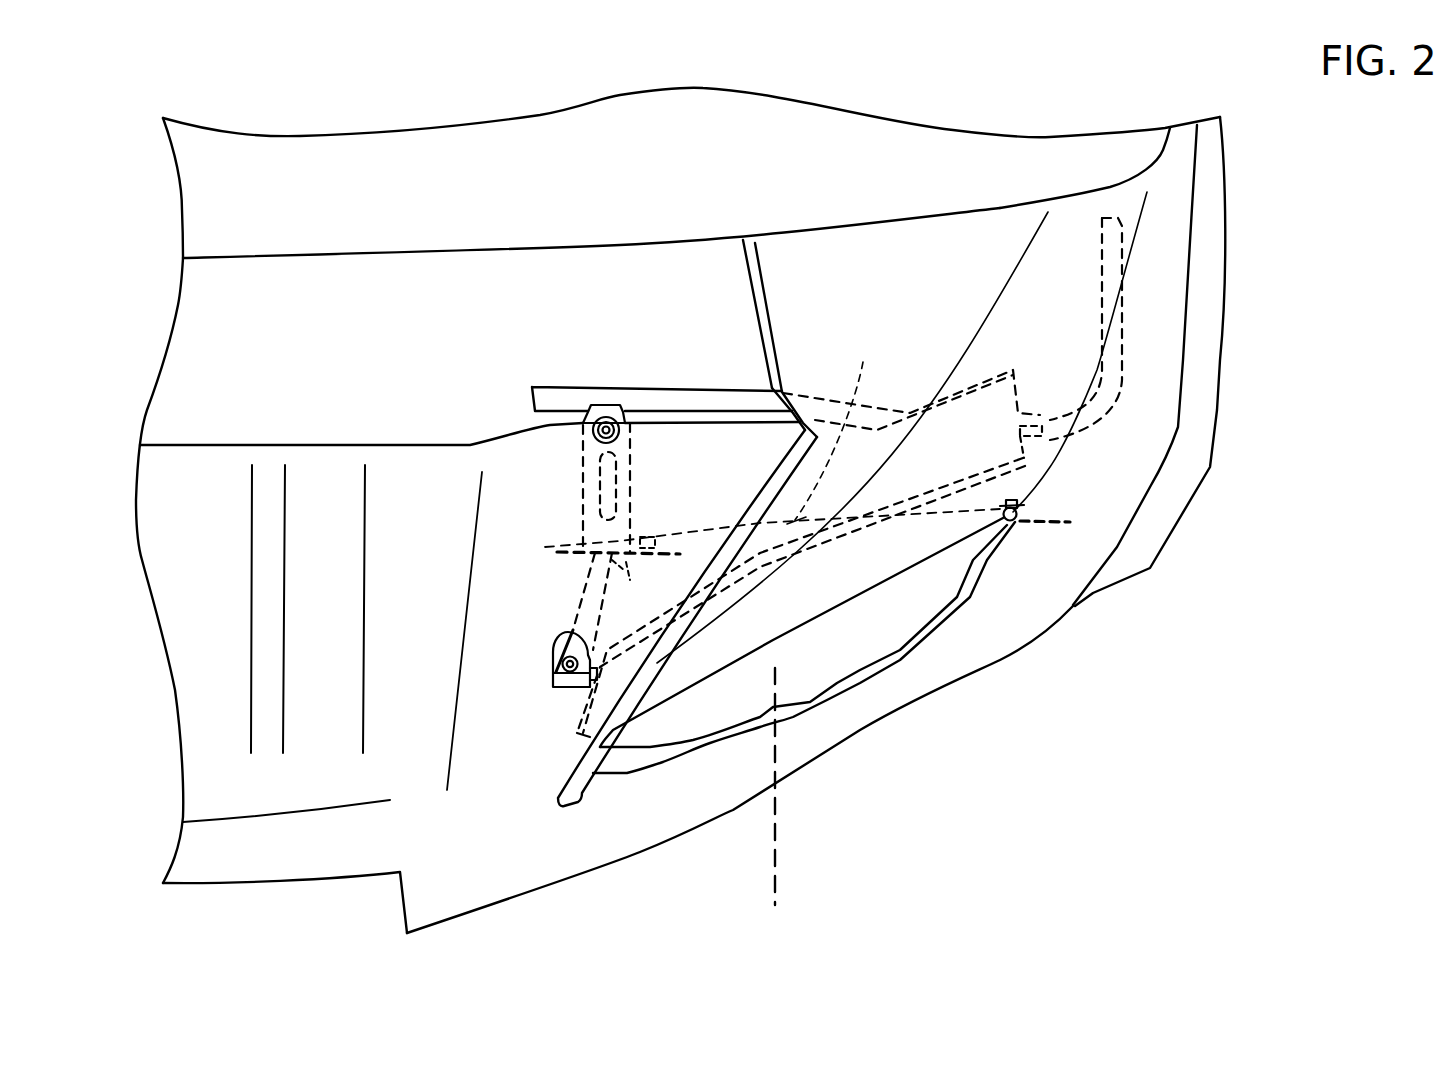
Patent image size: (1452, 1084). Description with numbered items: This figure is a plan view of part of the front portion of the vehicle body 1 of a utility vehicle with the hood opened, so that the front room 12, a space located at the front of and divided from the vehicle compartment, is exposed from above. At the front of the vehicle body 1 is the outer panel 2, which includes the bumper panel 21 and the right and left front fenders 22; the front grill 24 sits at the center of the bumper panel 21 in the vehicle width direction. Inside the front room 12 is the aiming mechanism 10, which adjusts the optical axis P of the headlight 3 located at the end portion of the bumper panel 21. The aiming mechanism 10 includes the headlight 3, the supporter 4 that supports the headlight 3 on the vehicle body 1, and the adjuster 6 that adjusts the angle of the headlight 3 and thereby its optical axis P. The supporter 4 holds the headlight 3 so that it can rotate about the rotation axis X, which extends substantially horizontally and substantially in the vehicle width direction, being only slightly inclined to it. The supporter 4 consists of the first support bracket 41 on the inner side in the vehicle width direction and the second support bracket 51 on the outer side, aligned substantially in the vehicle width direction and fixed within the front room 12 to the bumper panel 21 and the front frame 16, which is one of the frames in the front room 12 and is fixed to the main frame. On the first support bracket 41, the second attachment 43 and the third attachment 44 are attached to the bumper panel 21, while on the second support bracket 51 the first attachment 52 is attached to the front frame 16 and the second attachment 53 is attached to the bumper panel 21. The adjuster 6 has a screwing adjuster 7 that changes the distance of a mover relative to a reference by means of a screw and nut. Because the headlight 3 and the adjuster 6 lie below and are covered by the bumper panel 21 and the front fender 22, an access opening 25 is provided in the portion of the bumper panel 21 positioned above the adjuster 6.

The vehicle body 1 is at (1225, 203).
The outer panel 2 is at (999, 655).
The headlight 3 is at (847, 635).
The supporter 4 is at (563, 487).
The adjuster 6 is at (545, 656).
The screwing adjuster 7 is at (547, 633).
The aiming mechanism 10 is at (513, 550).
The front room 12 is at (281, 376).
The front frame 16 is at (732, 388).
The bumper panel 21 is at (570, 837).
The front fender 22 is at (1157, 353).
The front grill 24 is at (401, 900).
The access opening 25 is at (552, 683).
The first support bracket 41 is at (643, 485).
The second attachment 43 is at (562, 565).
The third attachment 44 is at (665, 565).
The second support bracket 51 is at (1020, 522).
The first attachment 52 is at (1045, 458).
The second attachment 53 is at (1025, 517).
The rotation axis X is at (830, 425).
The optical axis P is at (777, 857).